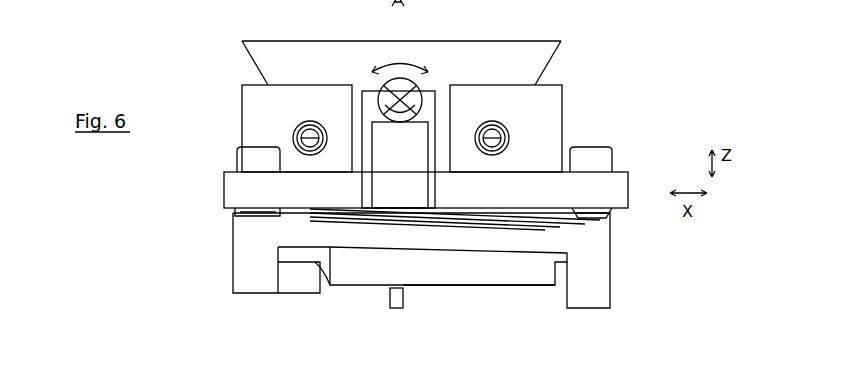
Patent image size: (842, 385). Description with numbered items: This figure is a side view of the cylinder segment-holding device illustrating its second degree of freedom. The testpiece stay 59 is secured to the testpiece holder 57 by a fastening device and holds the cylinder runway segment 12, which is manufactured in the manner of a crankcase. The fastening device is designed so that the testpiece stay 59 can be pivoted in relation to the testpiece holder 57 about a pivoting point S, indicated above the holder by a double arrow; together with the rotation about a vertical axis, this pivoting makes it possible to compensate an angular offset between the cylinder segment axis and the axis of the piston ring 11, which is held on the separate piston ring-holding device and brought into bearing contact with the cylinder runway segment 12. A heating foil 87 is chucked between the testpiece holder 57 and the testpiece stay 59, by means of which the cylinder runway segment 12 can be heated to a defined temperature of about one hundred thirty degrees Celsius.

The testpiece holder 57 is at (538, 124).
The heating foil 87 is at (593, 225).
The testpiece stay 59 is at (590, 267).
The piston ring 11 is at (404, 298).
The cylinder runway segment 12 is at (537, 284).
The pivoting point S is at (412, 98).